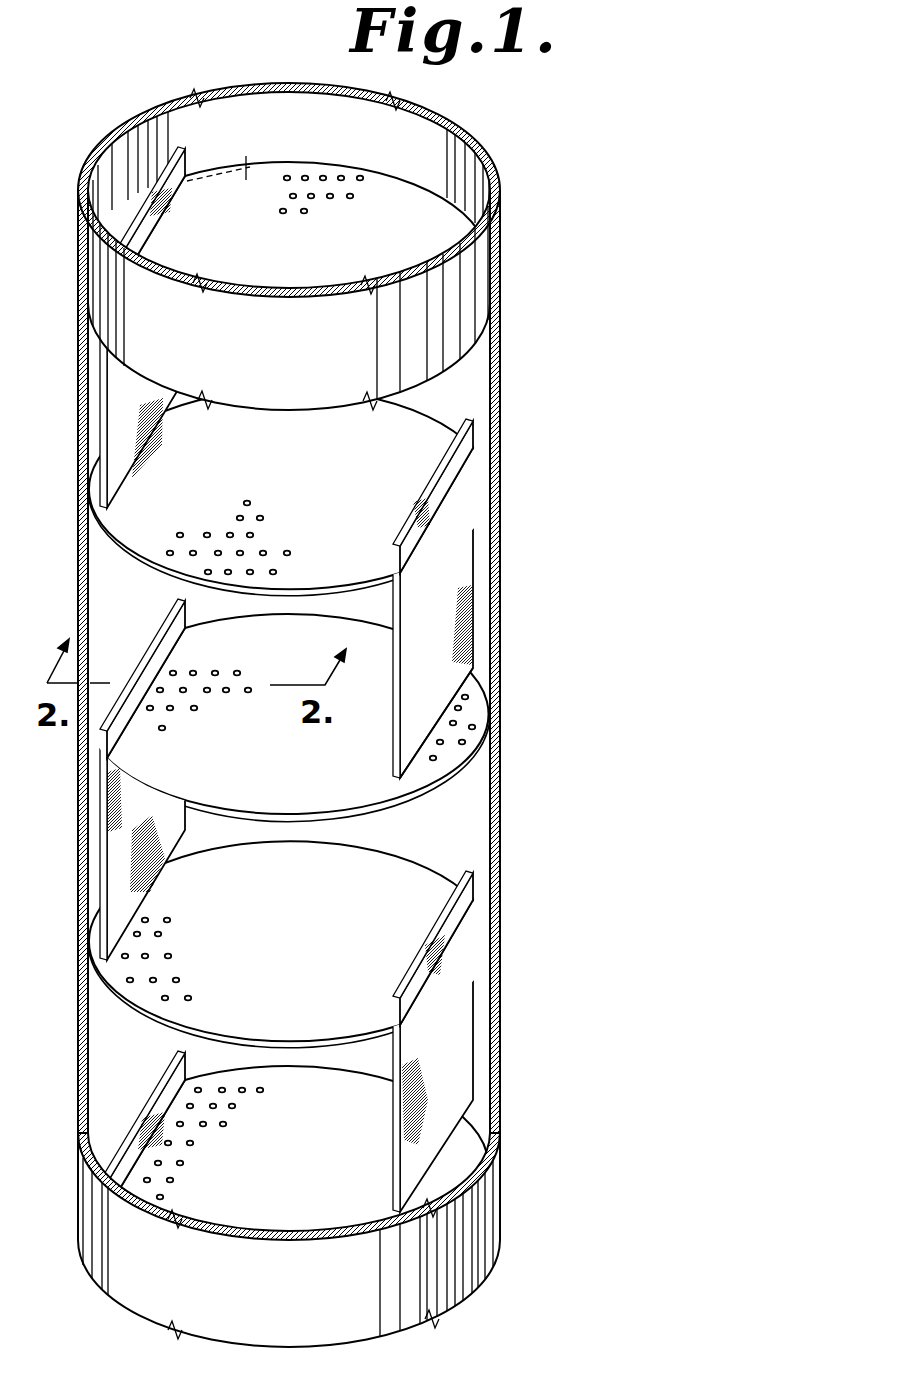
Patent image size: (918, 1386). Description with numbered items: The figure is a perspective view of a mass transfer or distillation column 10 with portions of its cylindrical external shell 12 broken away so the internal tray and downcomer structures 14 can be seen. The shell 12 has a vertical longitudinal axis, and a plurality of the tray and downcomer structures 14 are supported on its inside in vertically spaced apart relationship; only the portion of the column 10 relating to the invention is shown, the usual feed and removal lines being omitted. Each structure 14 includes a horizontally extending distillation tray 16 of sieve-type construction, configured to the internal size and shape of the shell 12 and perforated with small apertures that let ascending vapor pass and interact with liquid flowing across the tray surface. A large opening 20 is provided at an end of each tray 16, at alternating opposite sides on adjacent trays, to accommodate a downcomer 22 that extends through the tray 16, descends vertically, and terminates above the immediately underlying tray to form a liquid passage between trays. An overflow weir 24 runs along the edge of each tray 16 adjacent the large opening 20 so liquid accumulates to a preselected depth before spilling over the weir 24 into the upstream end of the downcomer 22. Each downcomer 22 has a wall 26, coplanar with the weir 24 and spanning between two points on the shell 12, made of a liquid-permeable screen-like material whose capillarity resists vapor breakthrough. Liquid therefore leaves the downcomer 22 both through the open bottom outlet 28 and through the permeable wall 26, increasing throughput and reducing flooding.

The column 10 is at (258, 72).
The external shell 12 is at (497, 722).
The tray and downcomer structure 14 is at (462, 410).
The distillation tray 16 is at (157, 571).
The large opening 20 is at (468, 623).
The downcomer 22 is at (476, 497).
The overflow weir 24 is at (460, 457).
The downcomer wall 26 is at (470, 648).
The outlet 28 is at (405, 768).